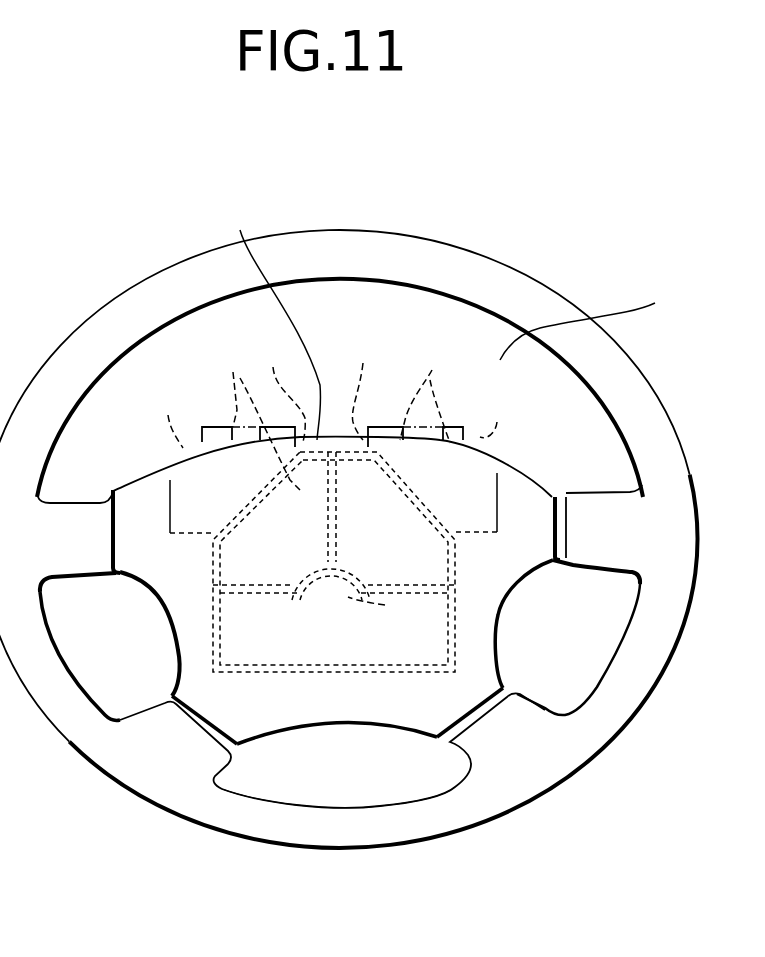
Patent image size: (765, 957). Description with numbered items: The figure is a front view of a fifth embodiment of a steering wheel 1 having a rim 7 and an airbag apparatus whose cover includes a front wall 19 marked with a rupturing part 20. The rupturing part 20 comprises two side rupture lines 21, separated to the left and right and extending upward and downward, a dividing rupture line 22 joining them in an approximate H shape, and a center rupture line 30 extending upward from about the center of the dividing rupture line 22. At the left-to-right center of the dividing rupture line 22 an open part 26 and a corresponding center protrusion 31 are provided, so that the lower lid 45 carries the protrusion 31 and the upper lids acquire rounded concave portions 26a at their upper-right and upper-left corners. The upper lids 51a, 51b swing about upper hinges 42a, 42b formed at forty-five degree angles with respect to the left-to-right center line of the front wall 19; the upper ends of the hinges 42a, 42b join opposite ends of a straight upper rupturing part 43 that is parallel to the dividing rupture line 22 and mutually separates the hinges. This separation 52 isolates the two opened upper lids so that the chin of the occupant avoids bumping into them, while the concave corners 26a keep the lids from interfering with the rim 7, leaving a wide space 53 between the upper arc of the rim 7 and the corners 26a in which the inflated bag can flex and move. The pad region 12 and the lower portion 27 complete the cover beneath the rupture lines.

The steering wheel 1 is at (548, 252).
The rim 7 is at (428, 248).
The pad 12 is at (484, 592).
The front wall 19 is at (470, 632).
The rupturing part 20 is at (462, 662).
The side rupture lines 21 is at (210, 560).
The dividing rupture line 22 is at (266, 610).
The open part 26 is at (318, 389).
The rounded concave portions 26a is at (318, 506).
The lower pad portion 27 is at (310, 665).
The center rupture line 30 is at (410, 488).
The center protrusion 31 is at (318, 578).
The upper hinge 42a is at (188, 462).
The upper hinge 42b is at (440, 463).
The upper rupturing part 43 is at (332, 432).
The lower lid 45 is at (390, 660).
The door 51a is at (245, 416).
The door 51b is at (432, 390).
The separation 52 is at (271, 322).
The space 53 is at (589, 318).